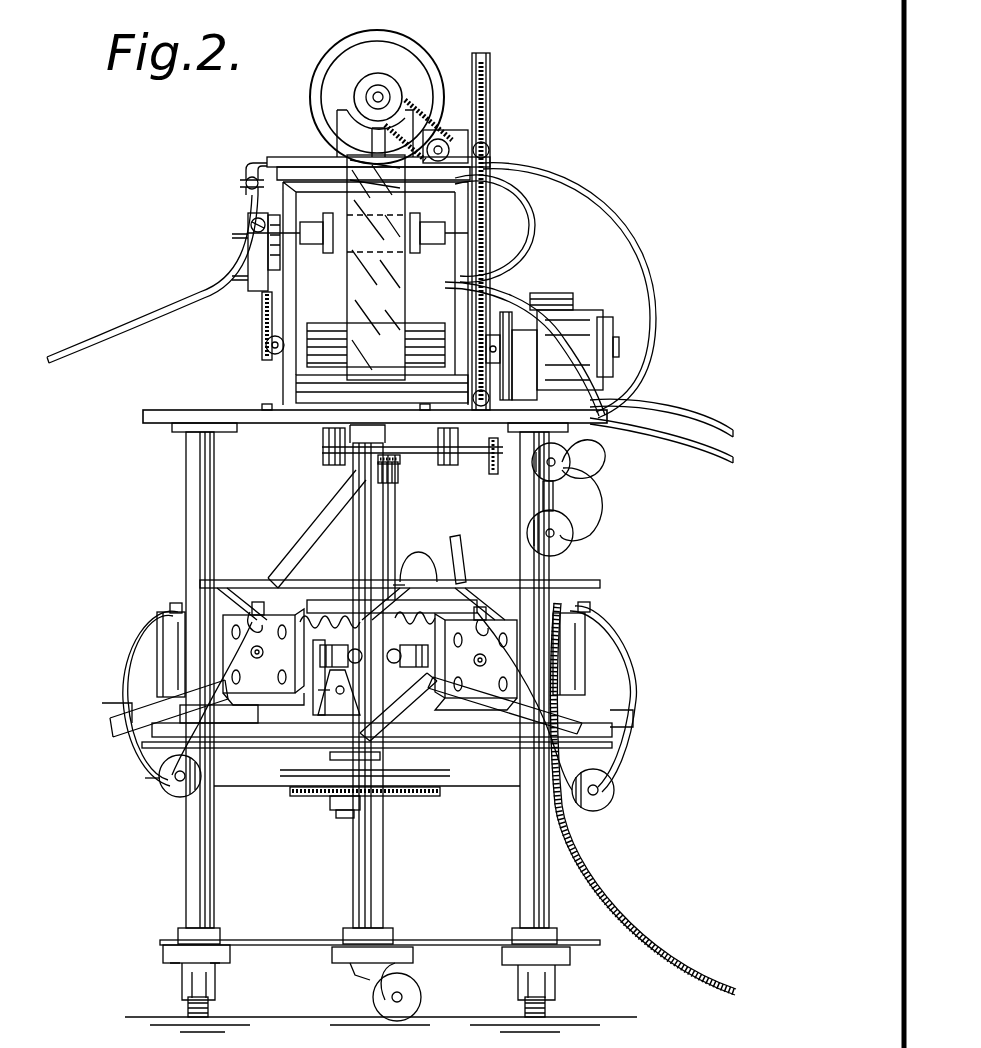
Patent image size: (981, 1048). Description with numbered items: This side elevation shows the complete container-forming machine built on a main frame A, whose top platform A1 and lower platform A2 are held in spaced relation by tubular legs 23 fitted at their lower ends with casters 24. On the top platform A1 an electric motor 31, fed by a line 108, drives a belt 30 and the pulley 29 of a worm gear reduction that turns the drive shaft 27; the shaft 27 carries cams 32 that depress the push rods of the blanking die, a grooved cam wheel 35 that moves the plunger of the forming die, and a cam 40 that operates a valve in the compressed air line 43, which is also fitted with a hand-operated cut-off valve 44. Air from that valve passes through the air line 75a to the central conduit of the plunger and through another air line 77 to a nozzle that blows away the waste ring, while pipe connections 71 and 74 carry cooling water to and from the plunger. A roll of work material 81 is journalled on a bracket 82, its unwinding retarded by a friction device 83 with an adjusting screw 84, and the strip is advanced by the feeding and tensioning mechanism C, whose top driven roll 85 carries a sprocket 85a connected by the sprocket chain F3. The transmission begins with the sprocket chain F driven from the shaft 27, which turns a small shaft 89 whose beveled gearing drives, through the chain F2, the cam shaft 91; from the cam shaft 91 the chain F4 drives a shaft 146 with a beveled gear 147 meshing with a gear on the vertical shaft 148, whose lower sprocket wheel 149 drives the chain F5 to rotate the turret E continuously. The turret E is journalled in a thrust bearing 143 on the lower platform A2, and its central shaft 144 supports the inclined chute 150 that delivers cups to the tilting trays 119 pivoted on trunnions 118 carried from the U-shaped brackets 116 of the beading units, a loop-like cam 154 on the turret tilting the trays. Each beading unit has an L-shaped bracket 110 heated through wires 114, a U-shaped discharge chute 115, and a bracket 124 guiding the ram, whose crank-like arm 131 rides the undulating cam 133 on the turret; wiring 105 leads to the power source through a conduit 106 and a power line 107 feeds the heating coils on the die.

The cams 32 is at (392, 62).
The grooved cam wheel 35 is at (321, 71).
The drive shaft 27 is at (372, 95).
The cam 40 is at (338, 122).
The sprocket chain F is at (430, 122).
The small shaft 89 is at (450, 132).
The belt 30 is at (482, 72).
The pulley 29 is at (490, 115).
The bracket 82 is at (299, 293).
The roll of work material 81 is at (349, 269).
The top driven roll 85 is at (427, 318).
The sprocket 85a is at (271, 366).
The sprocket chain F3 is at (264, 314).
The feeding and tensioning mechanism C is at (252, 350).
The friction device 83 is at (250, 243).
The adjusting screw 84 is at (250, 216).
The hand-operated cut-off valve 44 is at (240, 183).
The compressed air line 43 is at (207, 290).
The top platform A1 is at (204, 412).
The electric motor 31 is at (578, 323).
The cam shaft 91 is at (557, 347).
The air line 77 is at (622, 236).
The air line 75a is at (538, 246).
The sprocket chain F2 is at (484, 312).
The pipe connections 74 is at (668, 422).
The pipe connections 71 is at (678, 462).
The tubular legs 23 is at (188, 866).
The rotary turret E is at (362, 529).
The central shaft 144 is at (362, 555).
The vertical shaft 148 is at (390, 486).
The shaft 146 is at (478, 462).
The beveled gear 147 is at (398, 466).
The sprocket chain F4 is at (498, 450).
The main frame A is at (177, 485).
The line 108 is at (598, 528).
The power line 107 is at (600, 462).
The wiring 105 is at (594, 503).
The U-shaped bracket 116 is at (253, 563).
The inclined chute 150 is at (296, 541).
The tilting tray 119 is at (447, 538).
The trunnions 118 is at (418, 567).
The loop-like cam 154 is at (420, 560).
The L-shaped bracket 110 is at (166, 663).
The bracket 124 is at (318, 686).
The cam 133 is at (315, 628).
The crank-like arm 131 is at (332, 702).
The U-shaped discharge chute 115 is at (122, 730).
The lower platform A2 is at (268, 697).
The wires 114 is at (157, 657).
The thrust bearing 143 is at (380, 757).
The sprocket chain F5 is at (307, 796).
The sprocket wheel 149 is at (393, 797).
The casters 24 is at (216, 979).
The conduit 106 is at (558, 604).